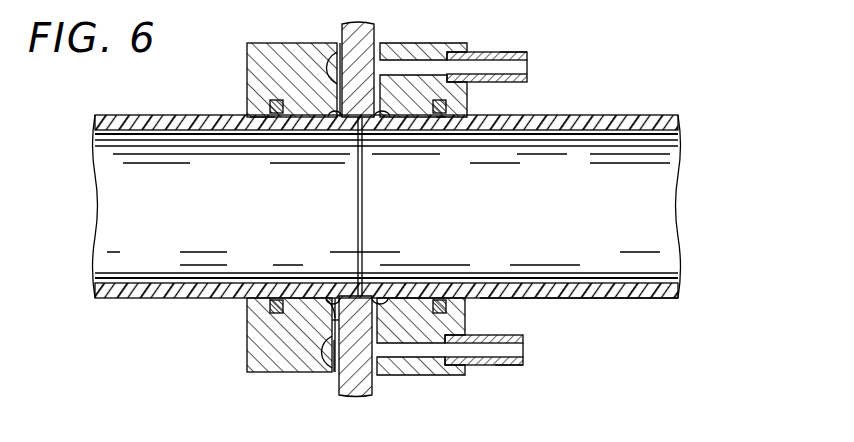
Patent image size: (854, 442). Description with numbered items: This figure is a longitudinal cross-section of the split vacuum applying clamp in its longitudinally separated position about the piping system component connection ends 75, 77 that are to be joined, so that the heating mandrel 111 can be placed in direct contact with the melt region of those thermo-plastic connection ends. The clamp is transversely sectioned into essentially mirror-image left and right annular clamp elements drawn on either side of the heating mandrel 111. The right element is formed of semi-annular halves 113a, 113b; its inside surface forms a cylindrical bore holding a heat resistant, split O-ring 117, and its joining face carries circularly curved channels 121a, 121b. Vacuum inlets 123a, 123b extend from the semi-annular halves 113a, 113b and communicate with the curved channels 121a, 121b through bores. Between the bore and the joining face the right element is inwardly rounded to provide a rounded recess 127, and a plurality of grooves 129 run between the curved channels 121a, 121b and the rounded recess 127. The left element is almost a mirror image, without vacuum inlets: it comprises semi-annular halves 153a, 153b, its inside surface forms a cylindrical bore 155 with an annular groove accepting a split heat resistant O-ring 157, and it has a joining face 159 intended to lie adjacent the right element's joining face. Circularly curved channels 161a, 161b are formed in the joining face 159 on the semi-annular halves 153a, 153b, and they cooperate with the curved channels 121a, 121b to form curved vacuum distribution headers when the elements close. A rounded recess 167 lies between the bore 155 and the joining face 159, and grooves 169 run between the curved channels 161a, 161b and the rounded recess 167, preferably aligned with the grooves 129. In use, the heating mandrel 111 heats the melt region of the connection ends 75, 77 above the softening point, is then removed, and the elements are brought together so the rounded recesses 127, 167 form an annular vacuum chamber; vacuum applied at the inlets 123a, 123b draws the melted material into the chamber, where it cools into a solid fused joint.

The piping system component connection end 75 is at (160, 283).
The piping system component connection end 77 is at (603, 288).
The heating mandrel 111 is at (374, 32).
The semi-annular half 113a is at (465, 312).
The semi-annular half 113b is at (467, 50).
The heat resistant O-ring 117 is at (441, 118).
The circularly curved channel 121a is at (385, 345).
The circularly curved channel 121b is at (384, 60).
The vacuum inlet 123a is at (517, 365).
The vacuum inlet 123b is at (508, 52).
The rounded recess 127 is at (393, 118).
The grooves 129 is at (402, 85).
The semi-annular half 153a is at (258, 373).
The semi-annular half 153b is at (249, 43).
The cylindrical bore 155 is at (262, 118).
The heat resistant O-ring 157 is at (277, 298).
The joining face 159 is at (326, 372).
The circularly curved channel 161a is at (326, 347).
The circularly curved channel 161b is at (333, 58).
The rounded recess 167 is at (326, 298).
The grooves 169 is at (332, 322).